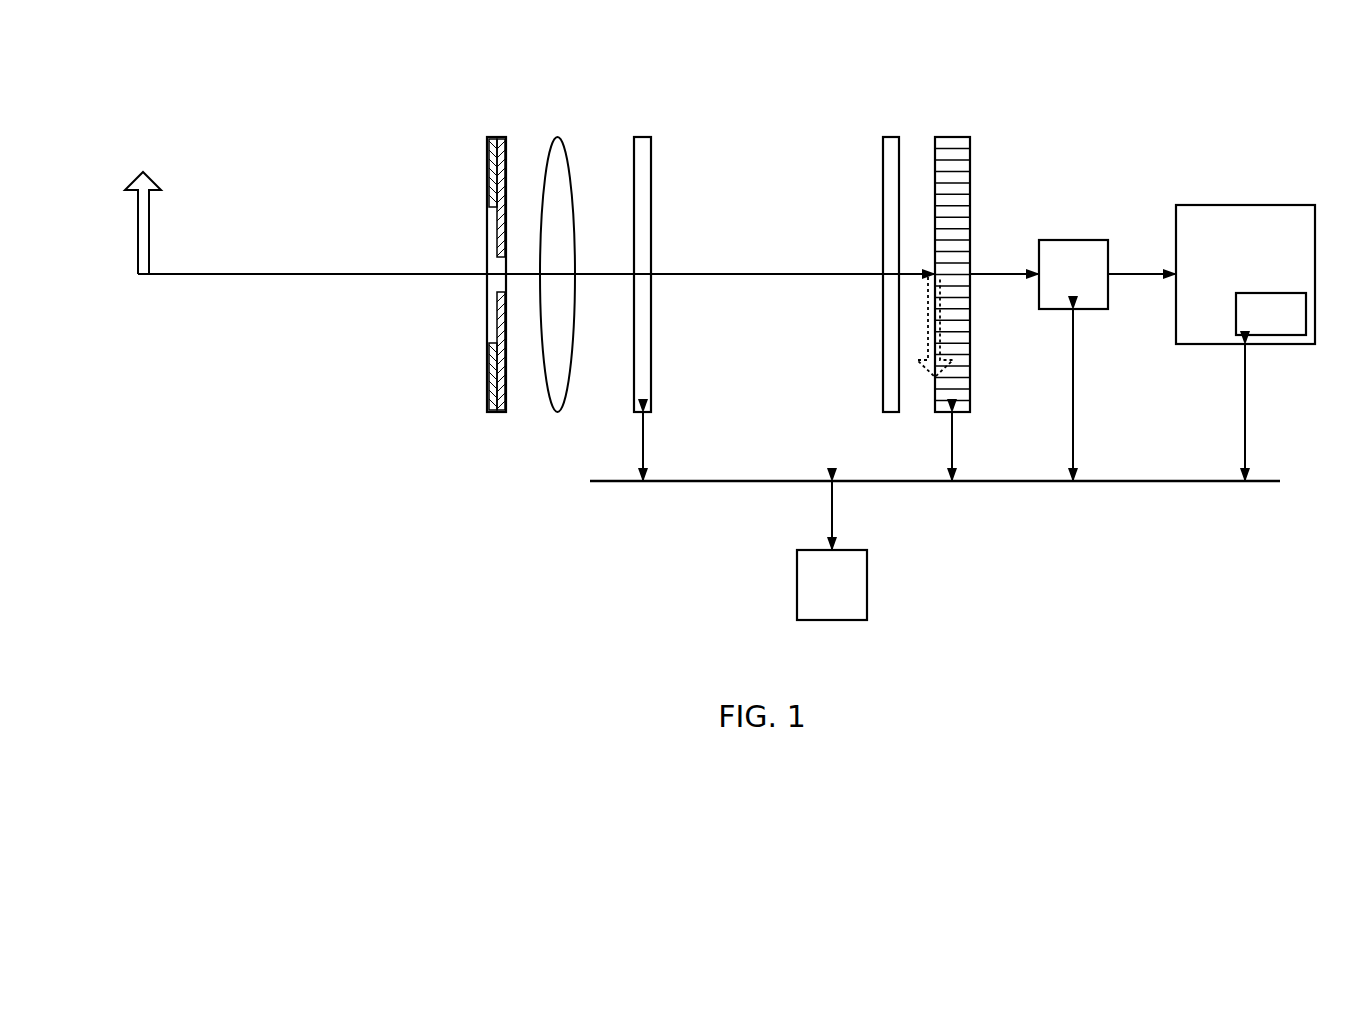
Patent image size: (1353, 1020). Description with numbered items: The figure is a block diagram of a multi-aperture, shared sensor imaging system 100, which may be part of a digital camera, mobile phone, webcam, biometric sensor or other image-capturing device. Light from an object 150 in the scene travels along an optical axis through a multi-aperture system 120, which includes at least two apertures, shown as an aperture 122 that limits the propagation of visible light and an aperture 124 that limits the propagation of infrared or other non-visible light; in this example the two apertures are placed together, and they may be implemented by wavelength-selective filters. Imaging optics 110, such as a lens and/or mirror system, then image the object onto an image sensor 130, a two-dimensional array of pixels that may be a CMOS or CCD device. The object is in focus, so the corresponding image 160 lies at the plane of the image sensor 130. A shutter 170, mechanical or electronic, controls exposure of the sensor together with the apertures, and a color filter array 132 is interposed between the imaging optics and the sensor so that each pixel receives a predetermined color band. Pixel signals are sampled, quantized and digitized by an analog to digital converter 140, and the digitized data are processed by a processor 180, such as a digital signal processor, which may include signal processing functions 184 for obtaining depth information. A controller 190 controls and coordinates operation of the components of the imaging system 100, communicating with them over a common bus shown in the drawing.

The multi-aperture, shared sensor imaging system 100 is at (305, 96).
The imaging optics 110 is at (557, 260).
The multi-aperture system 120 is at (500, 301).
The aperture 122 is at (493, 413).
The aperture 124 is at (493, 413).
The image sensor 130 is at (952, 294).
The color filter array 132 is at (891, 260).
The analog to digital converter 140 is at (1073, 360).
The object 150 is at (143, 208).
The image 160 is at (930, 359).
The shutter 170 is at (643, 294).
The processor 180 is at (1245, 343).
The signal processing functions 184 is at (1271, 314).
The controller 190 is at (832, 550).